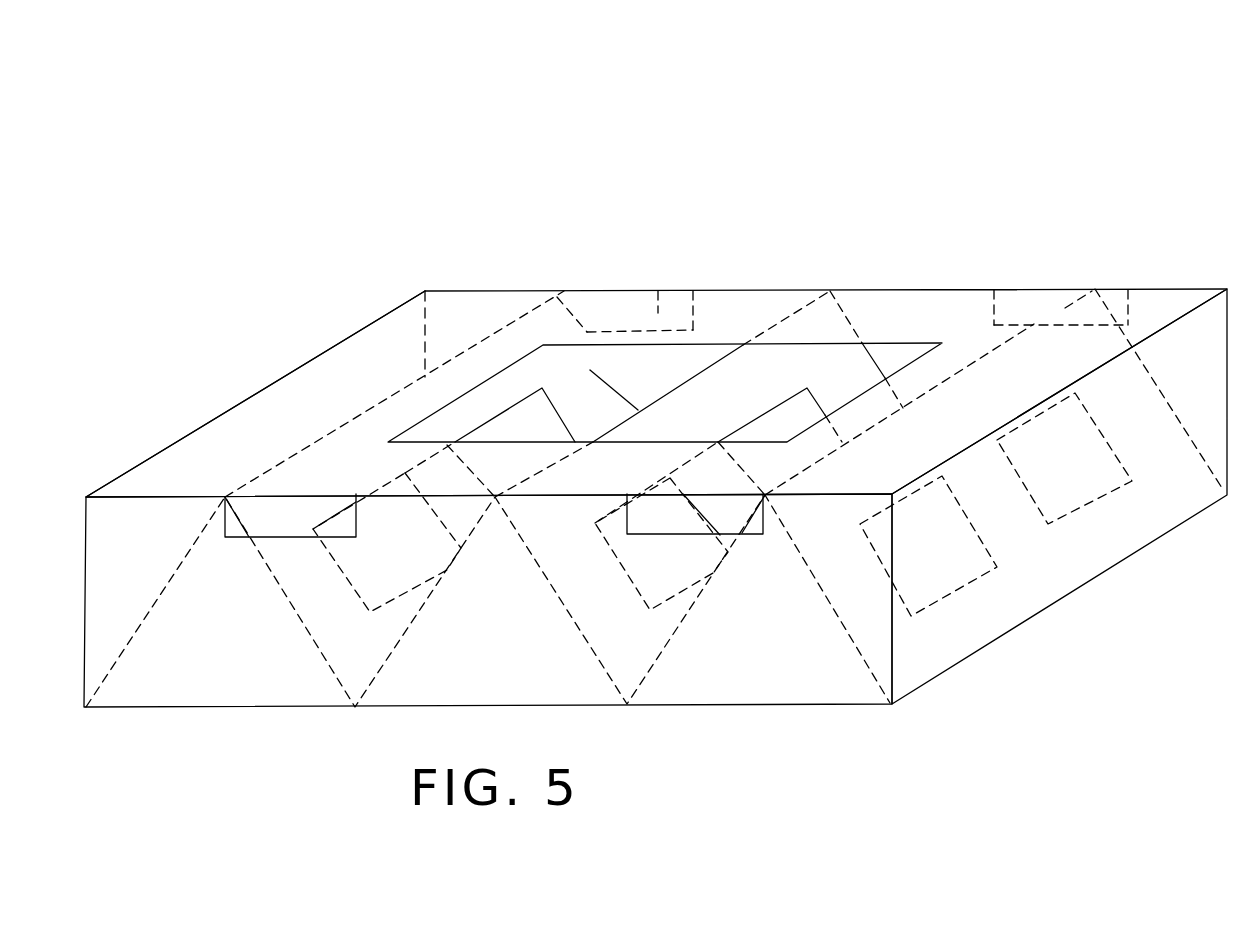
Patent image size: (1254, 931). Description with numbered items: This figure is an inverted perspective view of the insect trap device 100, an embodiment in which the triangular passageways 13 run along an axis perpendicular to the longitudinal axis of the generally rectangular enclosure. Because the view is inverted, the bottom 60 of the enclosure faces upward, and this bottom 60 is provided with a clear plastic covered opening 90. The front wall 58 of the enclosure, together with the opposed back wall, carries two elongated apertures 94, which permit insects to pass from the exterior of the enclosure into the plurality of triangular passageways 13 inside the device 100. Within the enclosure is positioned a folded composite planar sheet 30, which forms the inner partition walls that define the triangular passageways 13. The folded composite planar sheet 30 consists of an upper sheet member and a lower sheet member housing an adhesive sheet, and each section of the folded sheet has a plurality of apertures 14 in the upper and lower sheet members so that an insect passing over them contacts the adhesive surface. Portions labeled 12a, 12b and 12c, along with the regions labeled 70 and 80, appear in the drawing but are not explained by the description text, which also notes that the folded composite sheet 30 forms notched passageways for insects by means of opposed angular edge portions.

The device 100 is at (996, 145).
The elongated apertures 94 is at (660, 292).
The clear plastic covered opening 90 is at (722, 330).
The apertures 14 is at (529, 415).
The crystal 12a is at (590, 370).
The crystal 12b is at (814, 360).
The crystal 12c is at (1122, 300).
The bottom 60 is at (939, 300).
The folded composite planar sheet 30 is at (415, 402).
The left side surface 80 is at (182, 468).
The right side surface 70 is at (1162, 521).
The front wall 58 is at (797, 687).
The triangular passageways 13 is at (224, 674).